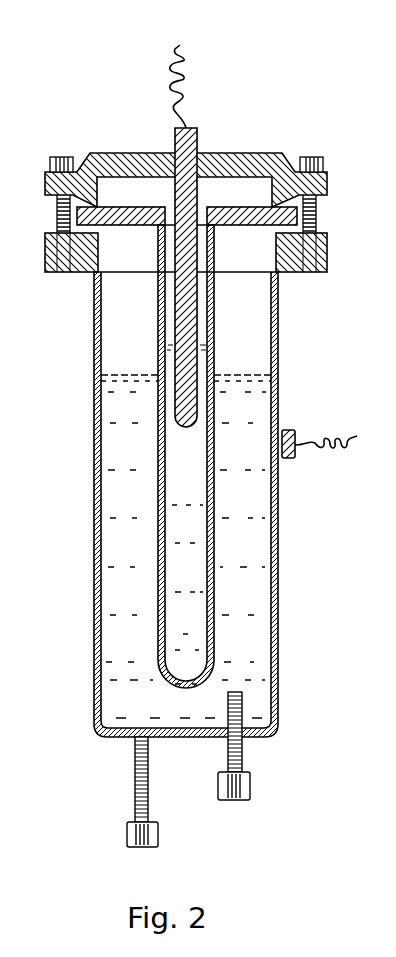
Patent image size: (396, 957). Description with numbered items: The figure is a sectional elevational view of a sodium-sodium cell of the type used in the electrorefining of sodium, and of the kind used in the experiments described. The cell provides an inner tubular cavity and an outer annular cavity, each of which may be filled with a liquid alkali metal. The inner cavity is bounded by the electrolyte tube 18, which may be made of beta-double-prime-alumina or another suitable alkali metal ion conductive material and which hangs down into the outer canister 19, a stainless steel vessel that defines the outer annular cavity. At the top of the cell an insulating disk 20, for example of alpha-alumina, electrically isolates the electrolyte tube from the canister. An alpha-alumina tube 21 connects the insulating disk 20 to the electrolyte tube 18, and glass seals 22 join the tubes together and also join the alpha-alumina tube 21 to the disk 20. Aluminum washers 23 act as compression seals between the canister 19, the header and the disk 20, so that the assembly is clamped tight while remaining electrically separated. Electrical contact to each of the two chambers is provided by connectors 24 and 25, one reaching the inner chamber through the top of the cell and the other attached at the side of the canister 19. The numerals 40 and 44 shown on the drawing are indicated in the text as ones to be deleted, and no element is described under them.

The electrolyte tube 18 is at (209, 456).
The outer canister 19 is at (288, 677).
The insulating disk 20 is at (299, 215).
The alpha-alumina tube 21 is at (206, 456).
The glass seals 22 is at (218, 228).
The aluminum washers 23 is at (100, 212).
The connector 24 is at (181, 46).
The connector 25 is at (296, 432).
The cover 40 is at (302, 153).
The electrode rod 44 is at (192, 144).